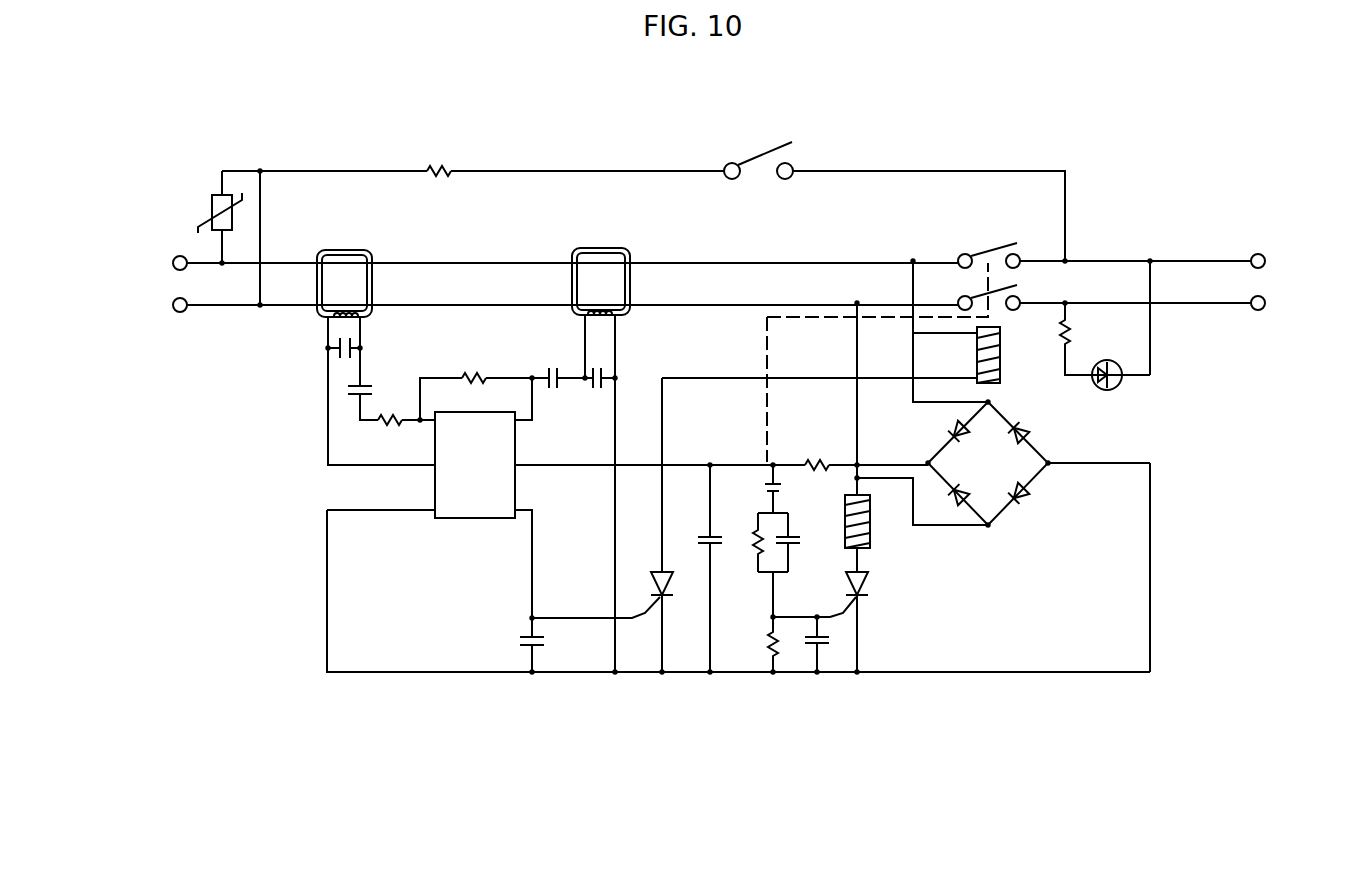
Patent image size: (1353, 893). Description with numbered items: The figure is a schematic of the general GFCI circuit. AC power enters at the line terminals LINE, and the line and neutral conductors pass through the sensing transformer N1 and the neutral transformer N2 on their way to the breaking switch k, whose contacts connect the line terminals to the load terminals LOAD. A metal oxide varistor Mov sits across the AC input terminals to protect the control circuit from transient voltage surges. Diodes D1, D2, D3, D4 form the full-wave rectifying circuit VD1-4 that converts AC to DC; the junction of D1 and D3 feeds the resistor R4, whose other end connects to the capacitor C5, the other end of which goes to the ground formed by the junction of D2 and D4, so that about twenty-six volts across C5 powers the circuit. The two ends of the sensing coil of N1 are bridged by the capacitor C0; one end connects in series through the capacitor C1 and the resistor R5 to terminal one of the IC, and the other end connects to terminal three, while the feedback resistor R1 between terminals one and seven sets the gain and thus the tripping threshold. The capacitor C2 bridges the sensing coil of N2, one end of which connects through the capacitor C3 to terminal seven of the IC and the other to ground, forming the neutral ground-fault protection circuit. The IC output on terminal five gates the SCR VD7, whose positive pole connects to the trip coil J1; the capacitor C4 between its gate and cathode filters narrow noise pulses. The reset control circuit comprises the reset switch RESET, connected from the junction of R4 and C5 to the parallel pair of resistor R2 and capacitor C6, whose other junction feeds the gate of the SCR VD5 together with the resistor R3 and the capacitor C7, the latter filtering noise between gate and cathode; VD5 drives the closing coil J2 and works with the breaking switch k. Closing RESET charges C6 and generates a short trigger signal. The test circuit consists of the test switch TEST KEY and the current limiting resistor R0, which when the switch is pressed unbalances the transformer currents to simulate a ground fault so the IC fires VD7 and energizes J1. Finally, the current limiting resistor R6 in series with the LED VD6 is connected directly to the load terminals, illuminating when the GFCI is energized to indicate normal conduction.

The line terminal LINE is at (157, 284).
The load terminal LOAD is at (1285, 282).
The metal oxide varistor Mov is at (206, 217).
The current limiting resistor R0 is at (439, 161).
The test switch TEST KEY is at (754, 150).
The sensing transformer N1 is at (331, 271).
The neutral transformer N2 is at (586, 268).
The capacitor C0 is at (322, 347).
The capacitor C1 is at (373, 387).
The resistor R5 is at (390, 433).
The feedback resistor R1 is at (474, 366).
The capacitor C3 is at (558, 365).
The capacitor C2 is at (600, 365).
The element IC is at (475, 465).
The capacitor C4 is at (515, 640).
The silicon controlled rectifier VD7 is at (617, 595).
The capacitor C5 is at (697, 568).
The reset switch RESET is at (747, 489).
The resistor R2 is at (759, 542).
The capacitor C6 is at (800, 542).
The resistor R4 is at (814, 455).
The resistor R3 is at (760, 622).
The capacitor C7 is at (812, 644).
The silicon controlled rectifier VD5 is at (865, 610).
The closing coil J2 is at (870, 521).
The trip coil J1 is at (1001, 355).
The breaking switch k is at (989, 266).
The rectifying circuit VD1-4 is at (991, 463).
The diode D1 is at (943, 431).
The diode D2 is at (1036, 430).
The diode D3 is at (944, 501).
The diode D4 is at (1036, 501).
The current limiting resistor R6 is at (1081, 339).
The light-emitting diode VD6 is at (1121, 386).